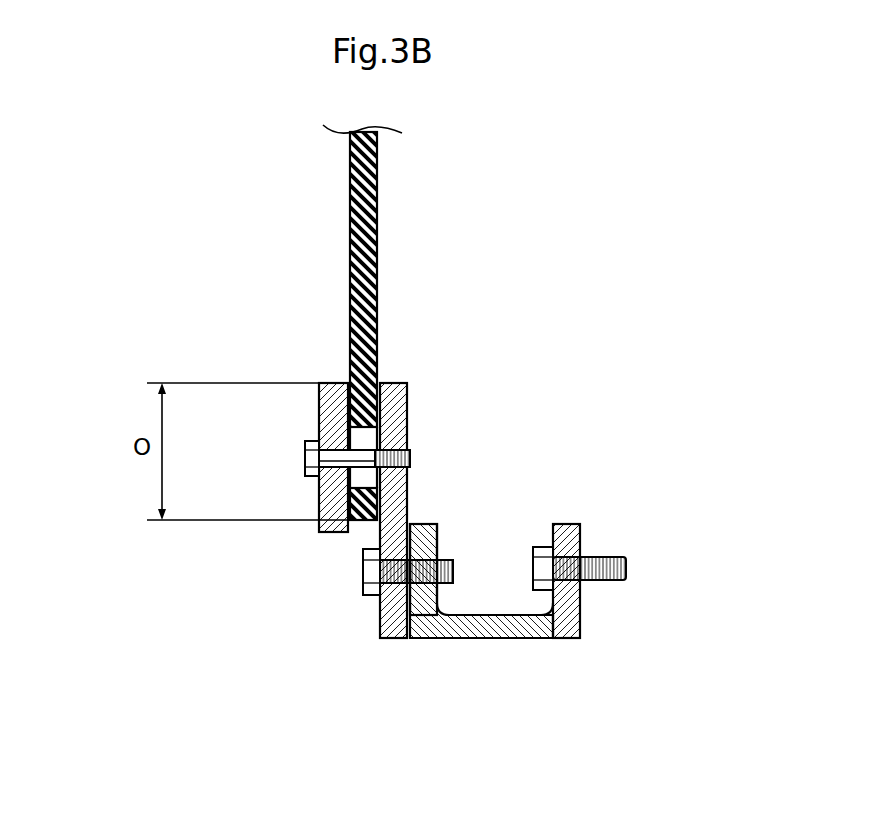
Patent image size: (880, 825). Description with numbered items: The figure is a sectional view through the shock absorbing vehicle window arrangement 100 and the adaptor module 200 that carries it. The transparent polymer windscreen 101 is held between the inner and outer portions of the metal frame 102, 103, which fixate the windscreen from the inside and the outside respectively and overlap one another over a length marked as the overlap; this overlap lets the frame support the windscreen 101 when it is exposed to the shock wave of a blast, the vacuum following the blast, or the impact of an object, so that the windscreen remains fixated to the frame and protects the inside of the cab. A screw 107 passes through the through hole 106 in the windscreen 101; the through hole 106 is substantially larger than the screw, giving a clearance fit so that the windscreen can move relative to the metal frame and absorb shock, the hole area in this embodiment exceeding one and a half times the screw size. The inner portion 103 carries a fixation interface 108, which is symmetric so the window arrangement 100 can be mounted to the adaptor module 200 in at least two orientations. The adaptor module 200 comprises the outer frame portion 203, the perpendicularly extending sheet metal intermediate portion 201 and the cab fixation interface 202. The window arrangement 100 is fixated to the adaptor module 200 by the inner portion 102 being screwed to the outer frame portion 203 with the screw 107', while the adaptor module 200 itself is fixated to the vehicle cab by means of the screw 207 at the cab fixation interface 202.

The shock absorbing vehicle window arrangement 100 is at (226, 302).
The transparent polymer windscreen 101 is at (377, 249).
The inner portion of the metal frame 102 is at (335, 382).
The outer portion of the metal frame 103 is at (395, 382).
The through hole 106 is at (367, 442).
The screw 107 is at (321, 450).
The screw 107' is at (355, 579).
The fixation interface 108 is at (398, 587).
The adaptor module 200 is at (497, 662).
The sheet metal intermediate portion 201 is at (512, 640).
The cab fixation interface 202 is at (581, 552).
The outer frame portion 203 is at (425, 614).
The screw 207 is at (543, 550).